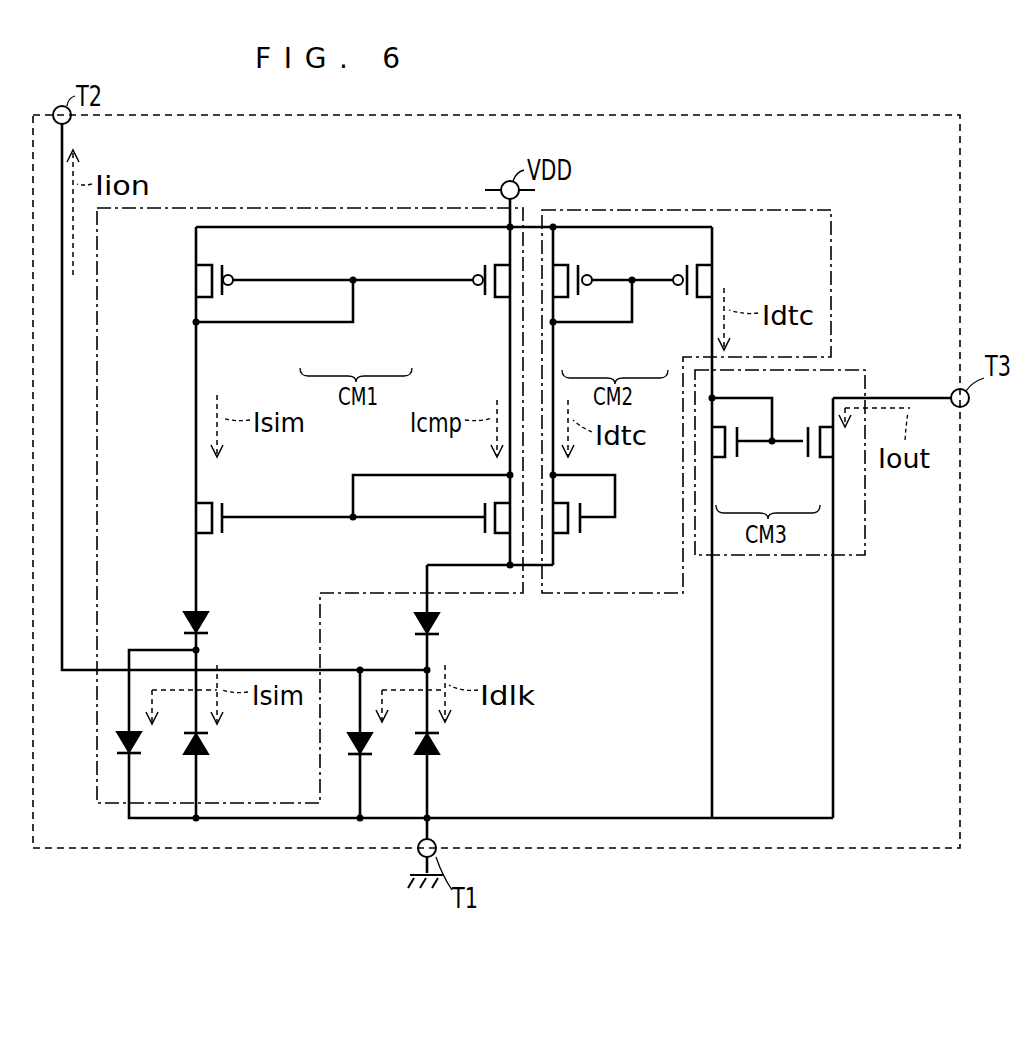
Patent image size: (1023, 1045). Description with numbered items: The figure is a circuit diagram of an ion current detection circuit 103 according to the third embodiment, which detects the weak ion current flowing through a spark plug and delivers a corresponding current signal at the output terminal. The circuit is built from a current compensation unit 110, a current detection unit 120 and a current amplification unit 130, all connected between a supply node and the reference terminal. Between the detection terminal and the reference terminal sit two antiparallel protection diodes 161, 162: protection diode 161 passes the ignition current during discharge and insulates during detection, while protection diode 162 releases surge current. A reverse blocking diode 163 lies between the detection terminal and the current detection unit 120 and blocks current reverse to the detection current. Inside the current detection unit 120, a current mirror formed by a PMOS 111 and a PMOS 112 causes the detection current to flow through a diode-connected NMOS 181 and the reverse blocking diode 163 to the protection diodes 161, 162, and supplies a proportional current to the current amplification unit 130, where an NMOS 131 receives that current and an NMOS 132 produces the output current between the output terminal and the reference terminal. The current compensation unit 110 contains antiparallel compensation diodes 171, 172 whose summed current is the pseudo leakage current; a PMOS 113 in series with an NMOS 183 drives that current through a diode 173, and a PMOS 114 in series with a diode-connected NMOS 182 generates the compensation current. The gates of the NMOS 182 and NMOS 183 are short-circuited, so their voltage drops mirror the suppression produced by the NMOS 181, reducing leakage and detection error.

The ion current detection circuit 103 is at (481, 114).
The current compensation unit 110 is at (310, 208).
The current detection unit 120 is at (710, 210).
The current amplification unit 130 is at (835, 370).
The PMOS 111 is at (578, 300).
The PMOS 112 is at (690, 299).
The PMOS 113 is at (224, 288).
The PMOS 114 is at (480, 290).
The NMOS 131 is at (730, 454).
The NMOS 132 is at (815, 456).
The diode-connected NMOS 181 is at (576, 533).
The NMOS 182 is at (488, 506).
The NMOS 183 is at (218, 504).
The protection diode 161 is at (368, 742).
The protection diode 162 is at (438, 742).
The reverse blocking diode 163 is at (438, 624).
The compensation diode 171 is at (137, 742).
The compensation diode 172 is at (207, 742).
The diode 173 is at (207, 624).